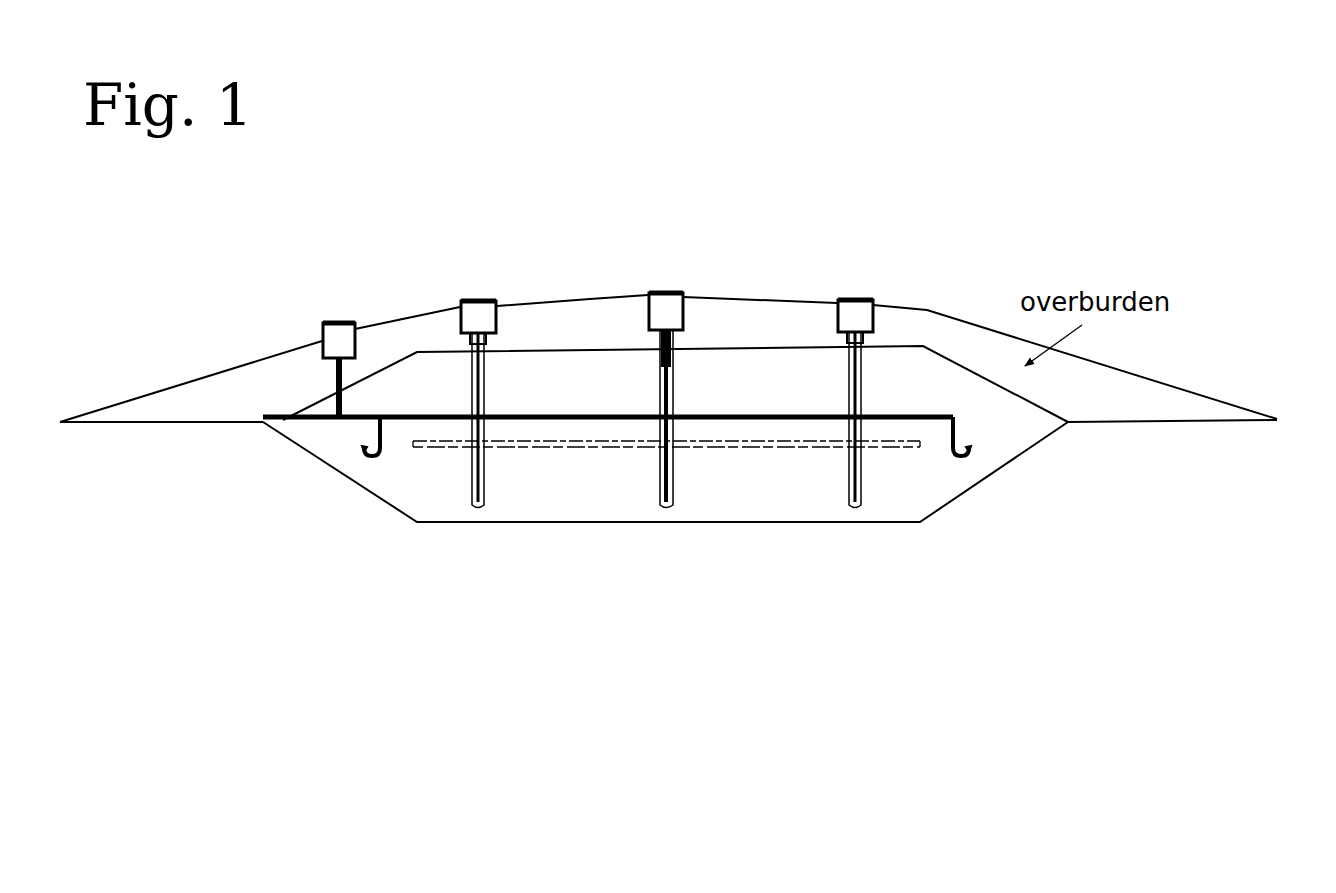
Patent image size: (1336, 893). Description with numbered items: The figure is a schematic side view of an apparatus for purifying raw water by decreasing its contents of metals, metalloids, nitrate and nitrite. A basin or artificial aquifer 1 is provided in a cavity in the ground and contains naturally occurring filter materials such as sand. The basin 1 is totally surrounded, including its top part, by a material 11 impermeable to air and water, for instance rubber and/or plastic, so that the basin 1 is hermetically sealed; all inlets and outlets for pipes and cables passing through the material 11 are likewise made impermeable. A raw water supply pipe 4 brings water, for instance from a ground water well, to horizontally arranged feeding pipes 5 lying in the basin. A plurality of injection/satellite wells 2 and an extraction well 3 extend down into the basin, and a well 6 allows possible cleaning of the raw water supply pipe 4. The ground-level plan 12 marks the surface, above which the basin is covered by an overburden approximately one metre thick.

The basin or artificial aquifer 1 is at (428, 493).
The injection/satellite wells 2 is at (477, 298).
The extraction well 3 is at (668, 291).
The raw water supply pipe 4 is at (303, 421).
The feeding pipes 5 is at (575, 449).
The well for cleaning the raw water supply pipe 6 is at (340, 320).
The impermeable material 11 is at (572, 342).
The ground-level plan 12 is at (1155, 425).